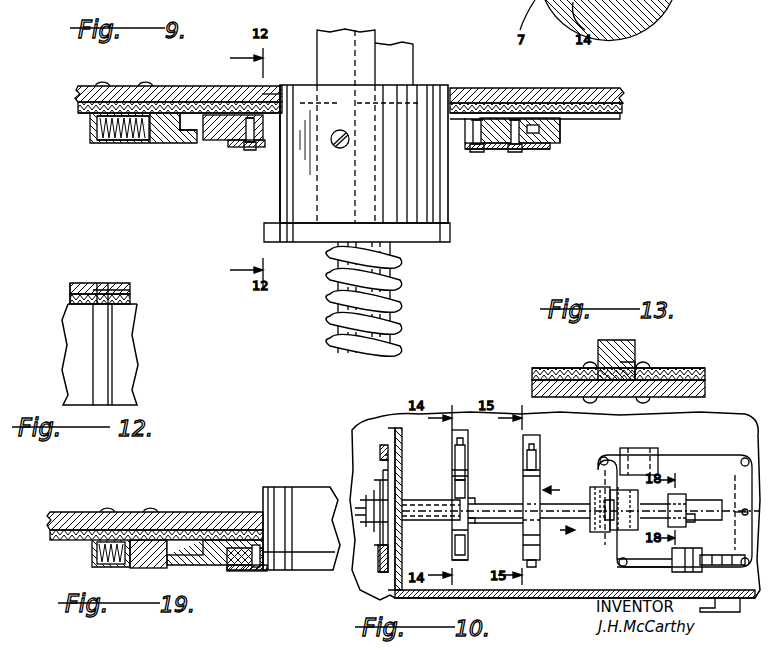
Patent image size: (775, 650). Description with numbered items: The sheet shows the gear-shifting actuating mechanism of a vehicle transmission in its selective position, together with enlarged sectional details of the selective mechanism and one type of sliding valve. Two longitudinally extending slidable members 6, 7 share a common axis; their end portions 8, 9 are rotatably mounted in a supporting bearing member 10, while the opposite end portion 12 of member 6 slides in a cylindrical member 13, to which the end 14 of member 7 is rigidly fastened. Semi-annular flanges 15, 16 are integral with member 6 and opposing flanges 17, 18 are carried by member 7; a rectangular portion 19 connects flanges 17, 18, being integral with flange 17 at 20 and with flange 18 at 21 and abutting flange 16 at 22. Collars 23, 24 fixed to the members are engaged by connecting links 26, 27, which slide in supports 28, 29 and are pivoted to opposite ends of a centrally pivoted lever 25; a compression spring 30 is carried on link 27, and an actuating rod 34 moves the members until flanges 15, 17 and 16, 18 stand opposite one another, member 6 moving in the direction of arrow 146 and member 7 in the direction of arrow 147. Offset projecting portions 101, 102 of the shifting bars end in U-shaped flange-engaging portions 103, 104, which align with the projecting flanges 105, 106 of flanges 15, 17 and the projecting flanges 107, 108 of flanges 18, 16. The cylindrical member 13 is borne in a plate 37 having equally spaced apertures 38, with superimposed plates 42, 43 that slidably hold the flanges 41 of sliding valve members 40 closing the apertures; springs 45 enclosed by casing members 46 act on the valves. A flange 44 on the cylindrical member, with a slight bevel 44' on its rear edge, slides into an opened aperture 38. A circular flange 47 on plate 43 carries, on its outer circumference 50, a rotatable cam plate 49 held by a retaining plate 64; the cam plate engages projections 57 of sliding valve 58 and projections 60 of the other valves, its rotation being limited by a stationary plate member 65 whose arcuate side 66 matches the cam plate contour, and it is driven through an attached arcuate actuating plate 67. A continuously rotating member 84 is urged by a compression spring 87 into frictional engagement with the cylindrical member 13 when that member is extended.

In FIG. 9, the slidable member 6 is at (400, 58).
In FIG. 10, the slidable member 6 is at (440, 520).
In FIG. 9, the slidable member 7 is at (318, 45).
In FIG. 10, the slidable member 7 is at (440, 500).
In FIG. 10, the end portion 8 is at (708, 500).
In FIG. 10, the end portion 9 is at (695, 521).
In FIG. 10, the supporting bearing member 10 is at (684, 496).
In FIG. 10, the opposite end portion 12 is at (410, 520).
In FIG. 9, the cylindrical member 13 is at (440, 210).
In FIG. 12, the cylindrical member 13 is at (128, 385).
In FIG. 19, the cylindrical member 13 is at (315, 555).
In FIG. 10, the cylindrical member 13 is at (382, 480).
In FIG. 10, the end 14 is at (420, 500).
In FIG. 10, the semi-annular flange 15 is at (523, 490).
In FIG. 10, the semi-annular flange 16 is at (466, 548).
In FIG. 10, the semi-annular flange 17 is at (540, 543).
In FIG. 10, the semi-annular flange 18 is at (466, 488).
In FIG. 10, the connecting portion 19 is at (506, 524).
In FIG. 10, the integral end 20 is at (523, 512).
In FIG. 10, the integral end portion 21 is at (476, 503).
In FIG. 10, the abutment 22 is at (476, 522).
In FIG. 10, the collar 23 is at (592, 487).
In FIG. 10, the collar 24 is at (620, 530).
In FIG. 10, the lever 25 is at (740, 536).
In FIG. 10, the connecting link 26 is at (687, 460).
In FIG. 10, the connecting link 27 is at (650, 567).
In FIG. 10, the support 28 is at (645, 455).
In FIG. 10, the support 29 is at (685, 572).
In FIG. 10, the compression spring 30 is at (728, 513).
In FIG. 10, the actuating rod 34 is at (725, 612).
In FIG. 9, the plate 37 is at (598, 95).
In FIG. 12, the plate 37 is at (130, 288).
In FIG. 13, the plate 37 is at (706, 392).
In FIG. 9, the apertures 38 is at (270, 95).
In FIG. 12, the apertures 38 is at (110, 283).
In FIG. 9, the sliding valve members 40 is at (182, 143).
In FIG. 12, the sliding valve members 40 is at (103, 285).
In FIG. 13, the sliding valve members 40 is at (608, 392).
In FIG. 13, the flanges 41 is at (636, 365).
In FIG. 9, the superimposed plate 42 is at (624, 108).
In FIG. 12, the superimposed plate 42 is at (130, 300).
In FIG. 13, the superimposed plate 42 is at (706, 374).
In FIG. 9, the superimposed plate 43 is at (617, 119).
In FIG. 12, the superimposed plate 43 is at (130, 306).
In FIG. 13, the superimposed plate 43 is at (700, 368).
In FIG. 9, the flange 44 is at (251, 163).
In FIG. 12, the flange 44 is at (135, 354).
In FIG. 12, the bevel 44' is at (53, 293).
In FIG. 9, the springs 45 is at (128, 140).
In FIG. 19, the springs 45 is at (122, 564).
In FIG. 9, the casing members 46 is at (96, 143).
In FIG. 13, the casing members 46 is at (628, 340).
In FIG. 19, the casing members 46 is at (92, 565).
In FIG. 9, the circular flange 47 is at (247, 150).
In FIG. 19, the circular flange 47 is at (262, 568).
In FIG. 9, the cam plate 49 is at (225, 140).
In FIG. 19, the cam plate 49 is at (240, 570).
In FIG. 9, the outer circumference 50 is at (498, 150).
In FIG. 19, the projections 57 is at (178, 565).
In FIG. 19, the sliding valve 58 is at (148, 568).
In FIG. 9, the projections 60 is at (195, 140).
In FIG. 9, the retaining plate 64 is at (256, 150).
In FIG. 19, the retaining plate 64 is at (236, 572).
In FIG. 9, the stationary plate member 65 is at (565, 122).
In FIG. 9, the arcuate-shaped side 66 is at (540, 130).
In FIG. 9, the actuating plate 67 is at (547, 150).
In FIG. 9, the rotating member 84 is at (432, 243).
In FIG. 9, the compression spring 87 is at (400, 323).
In FIG. 10, the compression spring 87 is at (366, 530).
In FIG. 10, the offset projecting portion 101 is at (528, 440).
In FIG. 10, the offset projecting portion 102 is at (452, 440).
In FIG. 10, the flange-engaging end portion 103 is at (527, 458).
In FIG. 10, the flange-engaging end portion 104 is at (468, 472).
In FIG. 10, the projecting flange 105 is at (540, 473).
In FIG. 10, the projecting flange 106 is at (530, 567).
In FIG. 10, the projecting flange 107 is at (455, 472).
In FIG. 10, the projecting flange 108 is at (460, 560).
In FIG. 10, the arrow 146 is at (560, 490).
In FIG. 10, the arrow 147 is at (575, 532).